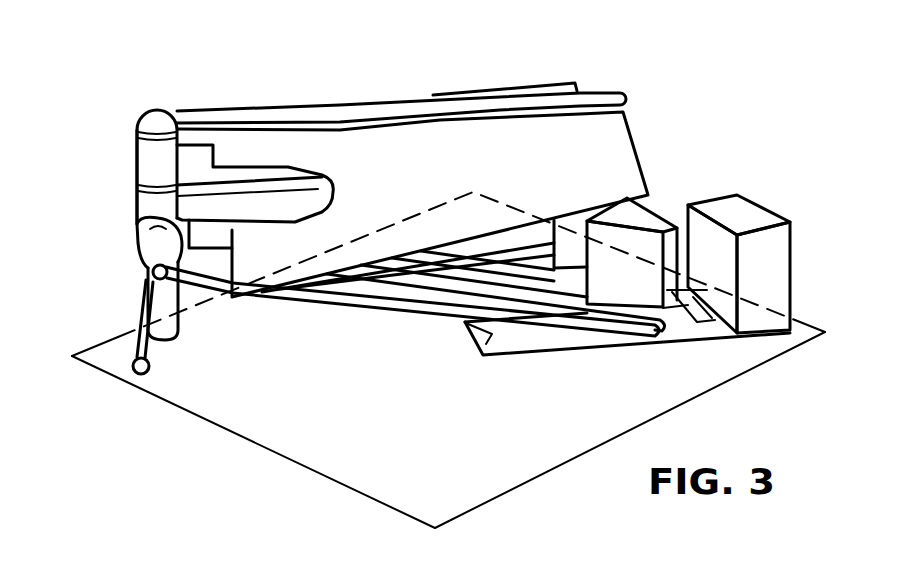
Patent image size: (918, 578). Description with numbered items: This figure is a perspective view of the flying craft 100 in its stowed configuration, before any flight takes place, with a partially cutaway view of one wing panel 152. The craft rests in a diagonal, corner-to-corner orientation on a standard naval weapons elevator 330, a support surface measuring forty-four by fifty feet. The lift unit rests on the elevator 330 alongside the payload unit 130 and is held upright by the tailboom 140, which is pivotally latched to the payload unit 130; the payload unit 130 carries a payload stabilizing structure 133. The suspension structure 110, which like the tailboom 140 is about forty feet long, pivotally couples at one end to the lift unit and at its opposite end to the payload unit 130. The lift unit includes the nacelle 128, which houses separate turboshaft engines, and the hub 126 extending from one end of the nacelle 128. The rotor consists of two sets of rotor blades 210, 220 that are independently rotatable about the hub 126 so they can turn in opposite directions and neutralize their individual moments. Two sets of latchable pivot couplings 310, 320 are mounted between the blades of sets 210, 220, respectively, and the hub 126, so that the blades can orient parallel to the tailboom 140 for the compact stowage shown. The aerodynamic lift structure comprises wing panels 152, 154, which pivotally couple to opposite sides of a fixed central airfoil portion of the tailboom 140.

The flying craft 100 is at (97, 88).
The suspension structure 110 is at (392, 322).
The hub 126 is at (162, 106).
The nacelle 128 is at (128, 245).
The payload unit 130 is at (543, 366).
The payload stabilizing structure 133 is at (808, 206).
The tailboom 140 is at (665, 192).
The wing panel 152 is at (640, 156).
The wing panel 154 is at (559, 82).
The set of rotor blades 210 is at (350, 170).
The set of rotor blades 220 is at (300, 98).
The set of latchable pivot couplings 310 is at (132, 185).
The set of latchable pivot couplings 320 is at (132, 125).
The naval weapons elevator 330 is at (277, 379).